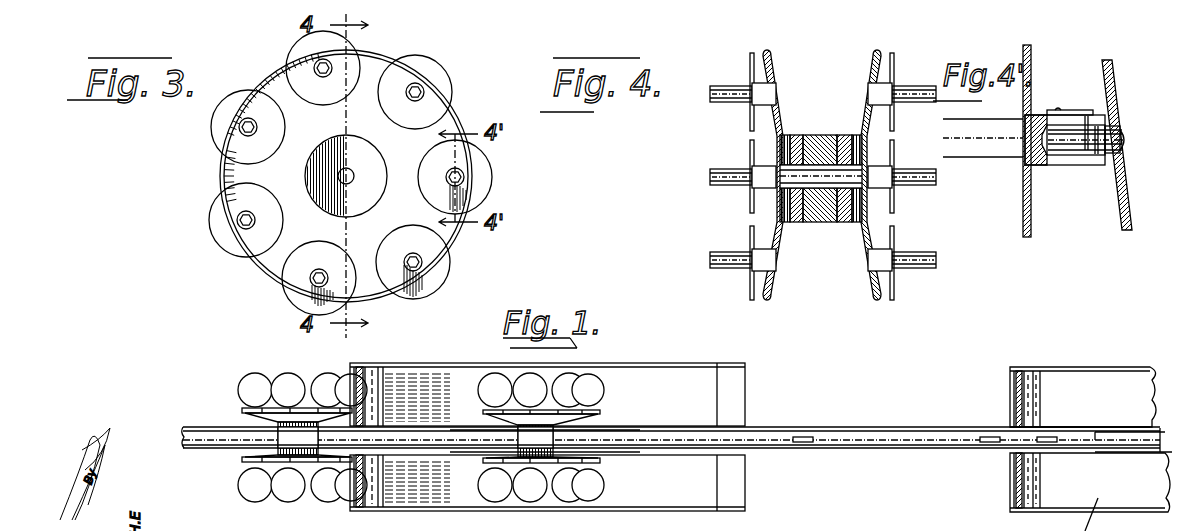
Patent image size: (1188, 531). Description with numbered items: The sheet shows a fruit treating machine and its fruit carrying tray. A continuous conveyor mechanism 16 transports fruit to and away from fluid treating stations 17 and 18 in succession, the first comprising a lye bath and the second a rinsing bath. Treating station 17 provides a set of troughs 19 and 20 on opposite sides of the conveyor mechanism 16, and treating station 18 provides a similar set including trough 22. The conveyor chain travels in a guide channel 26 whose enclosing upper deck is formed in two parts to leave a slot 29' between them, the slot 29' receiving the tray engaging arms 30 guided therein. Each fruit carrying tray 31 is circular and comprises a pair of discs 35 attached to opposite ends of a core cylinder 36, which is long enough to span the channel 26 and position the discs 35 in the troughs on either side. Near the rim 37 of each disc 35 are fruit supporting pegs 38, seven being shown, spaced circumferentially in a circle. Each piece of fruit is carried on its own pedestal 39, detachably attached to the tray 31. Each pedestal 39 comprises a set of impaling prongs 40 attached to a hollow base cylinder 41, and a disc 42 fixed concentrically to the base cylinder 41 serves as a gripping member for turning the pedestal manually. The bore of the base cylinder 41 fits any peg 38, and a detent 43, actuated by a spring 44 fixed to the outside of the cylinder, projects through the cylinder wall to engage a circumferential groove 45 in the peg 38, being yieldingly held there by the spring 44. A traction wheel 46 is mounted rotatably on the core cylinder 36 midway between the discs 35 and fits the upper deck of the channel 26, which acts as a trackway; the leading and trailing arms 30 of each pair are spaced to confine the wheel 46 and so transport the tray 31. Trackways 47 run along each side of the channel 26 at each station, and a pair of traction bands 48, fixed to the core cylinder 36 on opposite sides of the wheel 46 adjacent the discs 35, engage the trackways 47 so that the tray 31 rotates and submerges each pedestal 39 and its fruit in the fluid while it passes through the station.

In FIG. 1, the conveyor mechanism 16 is at (831, 434).
In FIG. 1, the fluid treating station 17 is at (658, 381).
In FIG. 1, the fluid treating station 18 is at (1083, 383).
In FIG. 1, the trough 19 is at (730, 375).
In FIG. 1, the trough 20 is at (730, 489).
In FIG. 1, the trough 22 is at (1125, 373).
In FIG. 1, the guide channel 26 is at (862, 434).
In FIG. 1, the slot 29' is at (1042, 426).
In FIG. 1, the tray engaging arms 30 is at (505, 438).
In FIG. 3, the fruit carrying tray 31 is at (398, 56).
In FIG. 4, the fruit carrying tray 31 is at (862, 53).
In FIG. 3, the disc 35 is at (234, 172).
In FIG. 4, the disc 35 is at (866, 70).
In FIG. 4', the disc 35 is at (1112, 72).
In FIG. 1, the disc 35 is at (235, 462).
In FIG. 4, the core cylinder 36 is at (812, 164).
In FIG. 3, the rim 37 is at (274, 82).
In FIG. 4, the rim 37 is at (772, 52).
In FIG. 4', the fruit supporting peg 38 is at (1115, 150).
In FIG. 3, the pedestal 39 is at (460, 176).
In FIG. 4, the pedestal 39 is at (905, 190).
In FIG. 4', the pedestal 39 is at (1054, 176).
In FIG. 3, the impaling prongs 40 is at (445, 80).
In FIG. 4, the impaling prongs 40 is at (725, 185).
In FIG. 4', the impaling prongs 40 is at (978, 118).
In FIG. 4', the base cylinder 41 is at (1038, 152).
In FIG. 3, the disc 42 is at (331, 104).
In FIG. 4, the disc 42 is at (748, 143).
In FIG. 4', the disc 42 is at (1030, 216).
In FIG. 4', the detent 43 is at (1108, 122).
In FIG. 4', the spring 44 is at (1063, 110).
In FIG. 4', the circumferential groove 45 is at (1088, 156).
In FIG. 4, the traction wheel 46 is at (822, 218).
In FIG. 1, the trackways 47 is at (642, 428).
In FIG. 4, the traction bands 48 is at (850, 134).